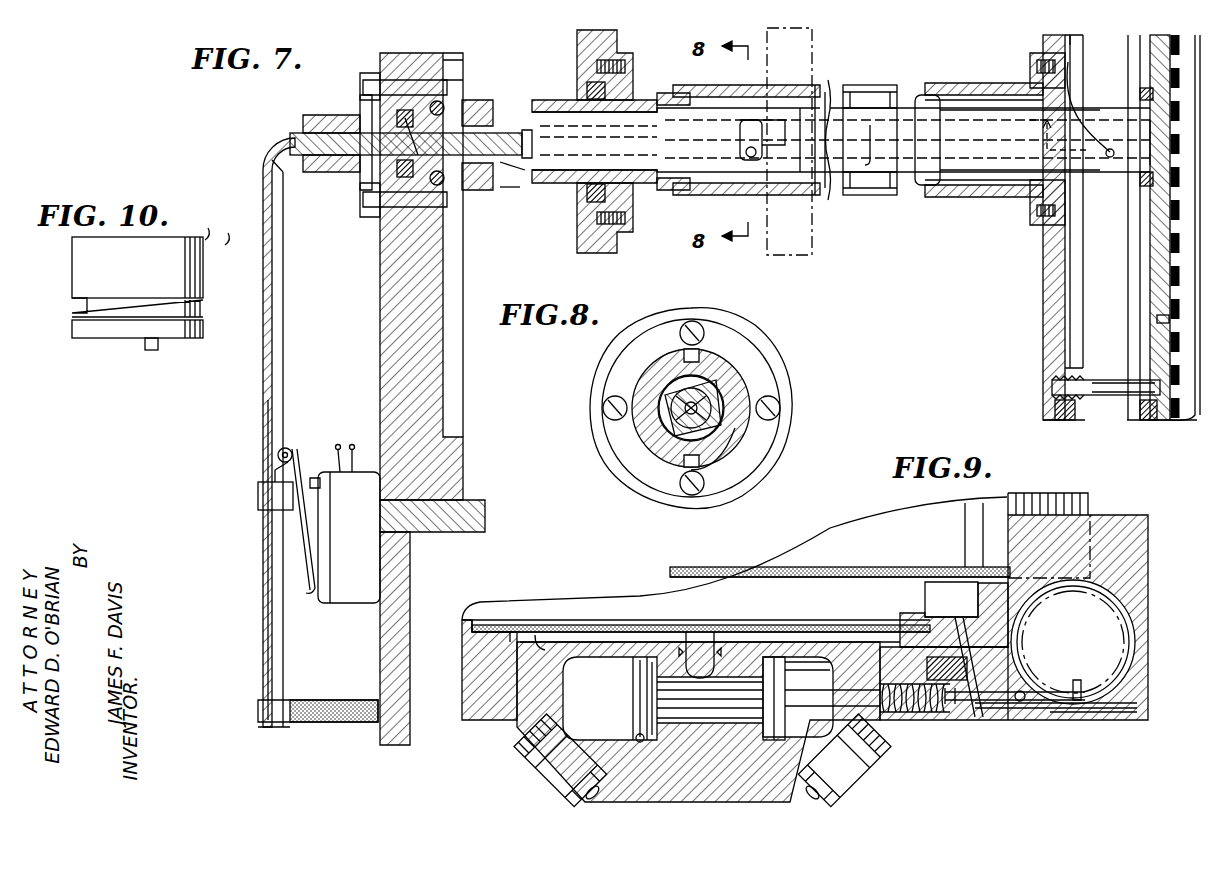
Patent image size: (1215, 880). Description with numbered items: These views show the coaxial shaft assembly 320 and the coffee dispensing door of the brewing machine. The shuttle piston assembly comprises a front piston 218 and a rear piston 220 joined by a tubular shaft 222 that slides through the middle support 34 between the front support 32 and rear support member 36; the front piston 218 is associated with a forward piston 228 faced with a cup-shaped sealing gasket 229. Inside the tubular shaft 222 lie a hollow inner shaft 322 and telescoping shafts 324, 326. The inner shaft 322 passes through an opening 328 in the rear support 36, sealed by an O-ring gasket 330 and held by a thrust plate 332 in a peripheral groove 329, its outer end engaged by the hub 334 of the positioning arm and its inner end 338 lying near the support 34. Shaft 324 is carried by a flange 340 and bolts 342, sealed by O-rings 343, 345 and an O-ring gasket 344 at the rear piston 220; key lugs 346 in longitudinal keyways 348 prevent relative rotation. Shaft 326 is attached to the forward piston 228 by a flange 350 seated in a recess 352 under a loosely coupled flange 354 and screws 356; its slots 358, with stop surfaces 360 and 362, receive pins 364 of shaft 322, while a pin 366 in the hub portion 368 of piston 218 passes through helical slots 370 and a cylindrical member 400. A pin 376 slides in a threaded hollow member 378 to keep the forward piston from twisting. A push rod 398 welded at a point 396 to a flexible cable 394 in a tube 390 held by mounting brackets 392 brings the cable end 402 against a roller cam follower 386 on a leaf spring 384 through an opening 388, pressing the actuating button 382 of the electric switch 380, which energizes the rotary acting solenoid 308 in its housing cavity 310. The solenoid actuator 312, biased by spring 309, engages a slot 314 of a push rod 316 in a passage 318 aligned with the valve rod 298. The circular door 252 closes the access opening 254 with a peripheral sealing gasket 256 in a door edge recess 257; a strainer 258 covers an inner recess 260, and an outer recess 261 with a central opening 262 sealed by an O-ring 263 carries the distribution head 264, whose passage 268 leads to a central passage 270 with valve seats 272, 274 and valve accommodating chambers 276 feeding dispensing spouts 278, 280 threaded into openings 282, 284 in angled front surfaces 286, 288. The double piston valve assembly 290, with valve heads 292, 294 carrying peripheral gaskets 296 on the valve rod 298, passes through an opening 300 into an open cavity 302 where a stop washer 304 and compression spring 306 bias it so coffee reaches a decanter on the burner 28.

In FIG. 7, the burner 28 is at (485, 515).
In FIG. 9, the front support 32 is at (1148, 685).
In FIG. 7, the middle support 34 is at (812, 250).
In FIG. 7, the rear support member 36 is at (463, 455).
In FIG. 7, the front piston 218 is at (1043, 340).
In FIG. 7, the rear piston 220 is at (605, 250).
In FIG. 7, the tubular shaft 222 is at (970, 197).
In FIG. 8, the tubular shaft 222 is at (720, 462).
In FIG. 7, the forward piston 228 is at (1160, 335).
In FIG. 7, the cup-shaped sealing gasket 229 is at (1165, 275).
In FIG. 9, the circular door 252 is at (495, 718).
In FIG. 9, the access opening 254 is at (965, 635).
In FIG. 9, the peripheral sealing gasket 256 is at (968, 665).
In FIG. 9, the door edge recess 257 is at (950, 680).
In FIG. 9, the strainer 258 is at (615, 608).
In FIG. 9, the inner recess 260 is at (515, 635).
In FIG. 9, the outer recess 261 is at (538, 640).
In FIG. 9, the central opening 262 is at (700, 650).
In FIG. 9, the O-ring 263 is at (720, 650).
In FIG. 9, the distribution head 264 is at (615, 802).
In FIG. 9, the passage 268 is at (688, 635).
In FIG. 9, the central passage 270 is at (678, 722).
In FIG. 9, the valve seat 272 is at (782, 722).
In FIG. 9, the valve seat 274 is at (636, 738).
In FIG. 9, the valve accommodating chambers 276 is at (612, 696).
In FIG. 9, the dispensing spout 278 is at (870, 768).
In FIG. 9, the dispensing spout 280 is at (530, 780).
In FIG. 9, the opening 282 is at (848, 795).
In FIG. 9, the opening 284 is at (540, 802).
In FIG. 9, the angled front surface 286 is at (865, 745).
In FIG. 9, the angled front surface 288 is at (540, 750).
In FIG. 9, the double piston valve assembly 290 is at (710, 712).
In FIG. 9, the valve head 292 is at (630, 688).
In FIG. 9, the valve head 294 is at (808, 661).
In FIG. 9, the peripheral gasket 296 is at (645, 708).
In FIG. 9, the valve rod 298 is at (828, 700).
In FIG. 9, the opening 300 is at (850, 710).
In FIG. 9, the open cavity 302 is at (905, 720).
In FIG. 9, the stop washer 304 is at (958, 710).
In FIG. 9, the compression spring 306 is at (905, 712).
In FIG. 9, the rotary acting solenoid 308 is at (1095, 618).
In FIG. 10, the rotary acting solenoid 308 is at (100, 266).
In FIG. 10, the spring 309 is at (190, 305).
In FIG. 9, the housing cavity 310 is at (1110, 597).
In FIG. 9, the actuator 312 is at (1097, 687).
In FIG. 10, the actuator 312 is at (145, 343).
In FIG. 9, the slot 314 is at (1140, 708).
In FIG. 9, the push rod 316 is at (1060, 710).
In FIG. 9, the passage 318 is at (1022, 690).
In FIG. 7, the concentric shaft assembly 320 is at (846, 68).
In FIG. 7, the hollow inner shaft 322 is at (490, 160).
In FIG. 8, the hollow inner shaft 322 is at (700, 412).
In FIG. 7, the outer telescoping shaft 324 is at (540, 190).
In FIG. 7, the inner telescoping shaft 326 is at (990, 172).
In FIG. 8, the inner telescoping shaft 326 is at (715, 428).
In FIG. 7, the opening 328 is at (420, 158).
In FIG. 7, the peripheral groove 329 is at (362, 100).
In FIG. 7, the O-ring gasket 330 is at (398, 127).
In FIG. 7, the thrust plate 332 is at (372, 210).
In FIG. 7, the hub 334 is at (318, 105).
In FIG. 7, the end 338 is at (783, 118).
In FIG. 7, the flange 340 is at (455, 85).
In FIG. 7, the bolts 342 is at (410, 80).
In FIG. 7, the O-rings 343 is at (440, 98).
In FIG. 7, the O-ring gasket 344 is at (487, 90).
In FIG. 7, the O-ring 345 is at (468, 100).
In FIG. 7, the key lugs 346 is at (680, 75).
In FIG. 8, the key lugs 346 is at (691, 360).
In FIG. 7, the longitudinal keyways 348 is at (742, 68).
In FIG. 8, the longitudinal keyways 348 is at (735, 370).
In FIG. 7, the flange 350 is at (1145, 133).
In FIG. 7, the recess 352 is at (1138, 185).
In FIG. 7, the loosely coupled flange 354 is at (1148, 150).
In FIG. 7, the screws 356 is at (1138, 96).
In FIG. 7, the slots 358 is at (830, 195).
In FIG. 7, the intermediate stop surface 360 is at (872, 165).
In FIG. 7, the second stop surface 362 is at (935, 120).
In FIG. 7, the pins 364 is at (750, 160).
In FIG. 8, the pins 364 is at (712, 395).
In FIG. 7, the pin 366 is at (1072, 75).
In FIG. 7, the hub portion 368 is at (1073, 55).
In FIG. 7, the helical slots 370 is at (1110, 157).
In FIG. 7, the pin 376 is at (1120, 397).
In FIG. 7, the threaded hollow member 378 is at (1098, 397).
In FIG. 7, the electric switch 380 is at (342, 590).
In FIG. 7, the actuating button 382 is at (312, 476).
In FIG. 7, the leaf spring 384 is at (305, 528).
In FIG. 7, the roller cam follower 386 is at (278, 450).
In FIG. 7, the opening 388 is at (275, 476).
In FIG. 7, the tube 390 is at (263, 413).
In FIG. 7, the mounting brackets 392 is at (290, 500).
In FIG. 7, the flexible cable 394 is at (520, 165).
In FIG. 7, the point 396 is at (522, 132).
In FIG. 7, the push rod 398 is at (808, 135).
In FIG. 7, the cylindrical member 400 is at (1042, 122).
In FIG. 7, the end 402 is at (268, 185).